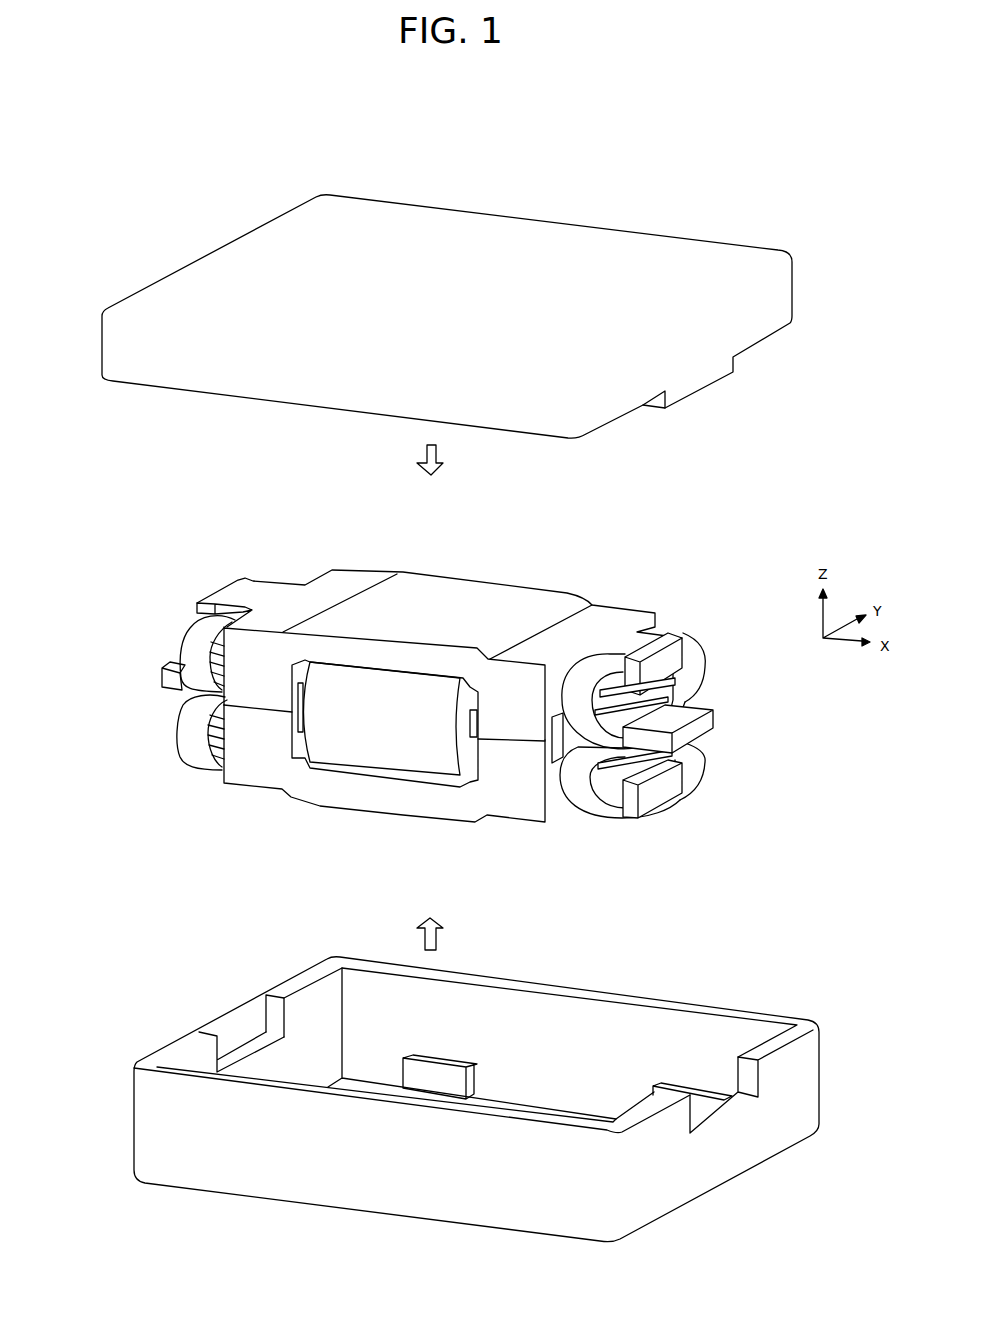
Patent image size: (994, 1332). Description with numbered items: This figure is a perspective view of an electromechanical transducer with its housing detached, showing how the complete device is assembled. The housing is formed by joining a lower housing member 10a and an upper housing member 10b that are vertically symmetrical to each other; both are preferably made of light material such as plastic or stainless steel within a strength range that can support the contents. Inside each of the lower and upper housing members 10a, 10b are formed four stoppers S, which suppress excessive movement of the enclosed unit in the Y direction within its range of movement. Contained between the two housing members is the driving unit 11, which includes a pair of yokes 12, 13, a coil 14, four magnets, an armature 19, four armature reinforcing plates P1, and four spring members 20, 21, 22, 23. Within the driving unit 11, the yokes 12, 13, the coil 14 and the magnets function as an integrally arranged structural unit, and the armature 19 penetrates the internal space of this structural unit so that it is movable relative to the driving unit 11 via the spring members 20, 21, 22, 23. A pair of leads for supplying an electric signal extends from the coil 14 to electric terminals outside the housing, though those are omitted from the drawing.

The lower housing member 10a is at (188, 1153).
The upper housing member 10b is at (215, 285).
The driving unit 11 is at (108, 597).
The yoke 12 is at (403, 818).
The yoke 13 is at (470, 603).
The coil 14 is at (352, 735).
The armature 19 is at (713, 723).
The spring member 20 is at (578, 790).
The spring member 21 is at (586, 677).
The spring member 22 is at (193, 747).
The spring member 23 is at (193, 647).
The armature reinforcing plate P1 is at (683, 708).
The stopper S is at (477, 1084).